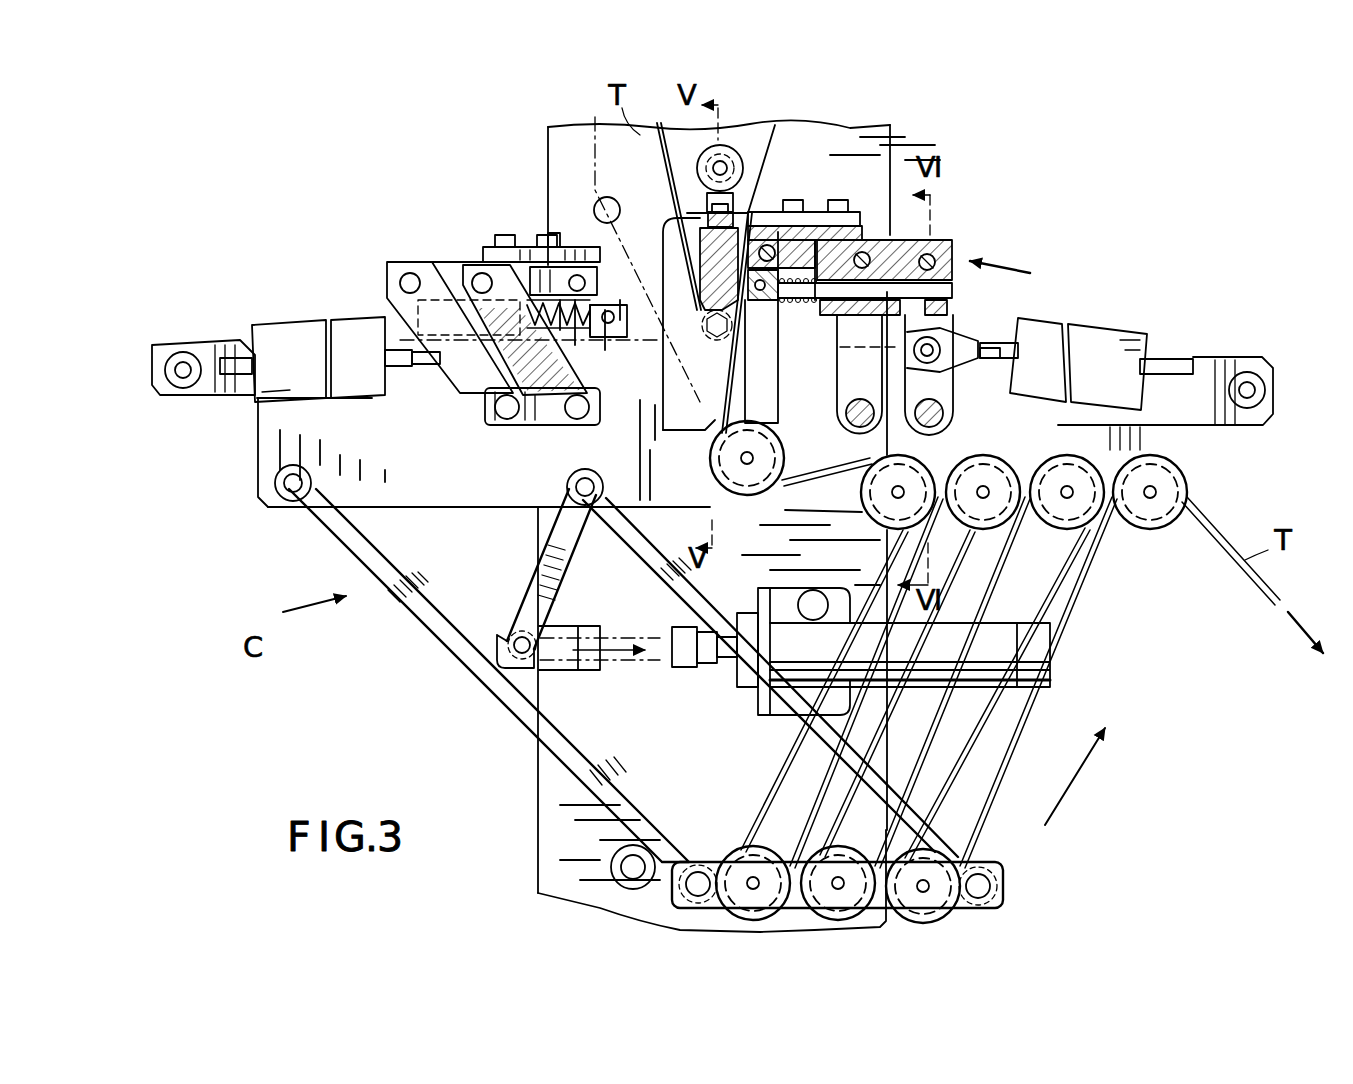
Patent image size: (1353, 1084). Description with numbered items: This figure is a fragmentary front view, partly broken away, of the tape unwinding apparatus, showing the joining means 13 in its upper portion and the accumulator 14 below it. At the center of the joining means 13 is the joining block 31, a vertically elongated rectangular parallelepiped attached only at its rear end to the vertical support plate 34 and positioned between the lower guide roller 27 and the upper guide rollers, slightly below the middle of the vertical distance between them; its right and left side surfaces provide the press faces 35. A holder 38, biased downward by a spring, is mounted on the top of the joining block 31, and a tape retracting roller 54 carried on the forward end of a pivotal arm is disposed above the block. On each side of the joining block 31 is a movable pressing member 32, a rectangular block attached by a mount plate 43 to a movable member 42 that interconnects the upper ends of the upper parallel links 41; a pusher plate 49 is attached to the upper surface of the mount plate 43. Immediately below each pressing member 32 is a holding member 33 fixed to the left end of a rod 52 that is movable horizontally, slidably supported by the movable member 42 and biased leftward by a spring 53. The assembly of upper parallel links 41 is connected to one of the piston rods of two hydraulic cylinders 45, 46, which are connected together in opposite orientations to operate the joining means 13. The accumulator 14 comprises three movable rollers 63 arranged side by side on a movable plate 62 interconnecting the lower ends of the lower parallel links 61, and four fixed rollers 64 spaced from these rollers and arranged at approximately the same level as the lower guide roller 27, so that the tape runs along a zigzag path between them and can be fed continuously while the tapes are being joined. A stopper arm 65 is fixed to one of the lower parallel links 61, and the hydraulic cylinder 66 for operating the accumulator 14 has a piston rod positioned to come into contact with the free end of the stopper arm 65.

The joining means 13 is at (712, 320).
The accumulator 14 is at (920, 651).
The lower guide roller 27 is at (720, 460).
The joining block 31 is at (720, 324).
The movable pressing member 32 is at (671, 221).
The holding member 33 is at (672, 334).
The vertical support plate 34 is at (598, 524).
The press face 35 is at (704, 271).
The holder 38 is at (705, 169).
The upper parallel links 41 is at (712, 378).
The movable member 42 is at (706, 280).
The mount plate 43 is at (641, 274).
The hydraulic cylinder 45 is at (711, 336).
The hydraulic cylinder 46 is at (706, 341).
The pusher plate 49 is at (656, 191).
The rod 52 is at (897, 297).
The spring 53 is at (792, 314).
The tape retracting roller 54 is at (718, 259).
The lower parallel links 61 is at (482, 663).
The movable plate 62 is at (852, 875).
The movable rollers 63 is at (827, 847).
The fixed rollers 64 is at (1024, 535).
The stopper arm 65 is at (553, 569).
The hydraulic cylinder 66 is at (811, 677).